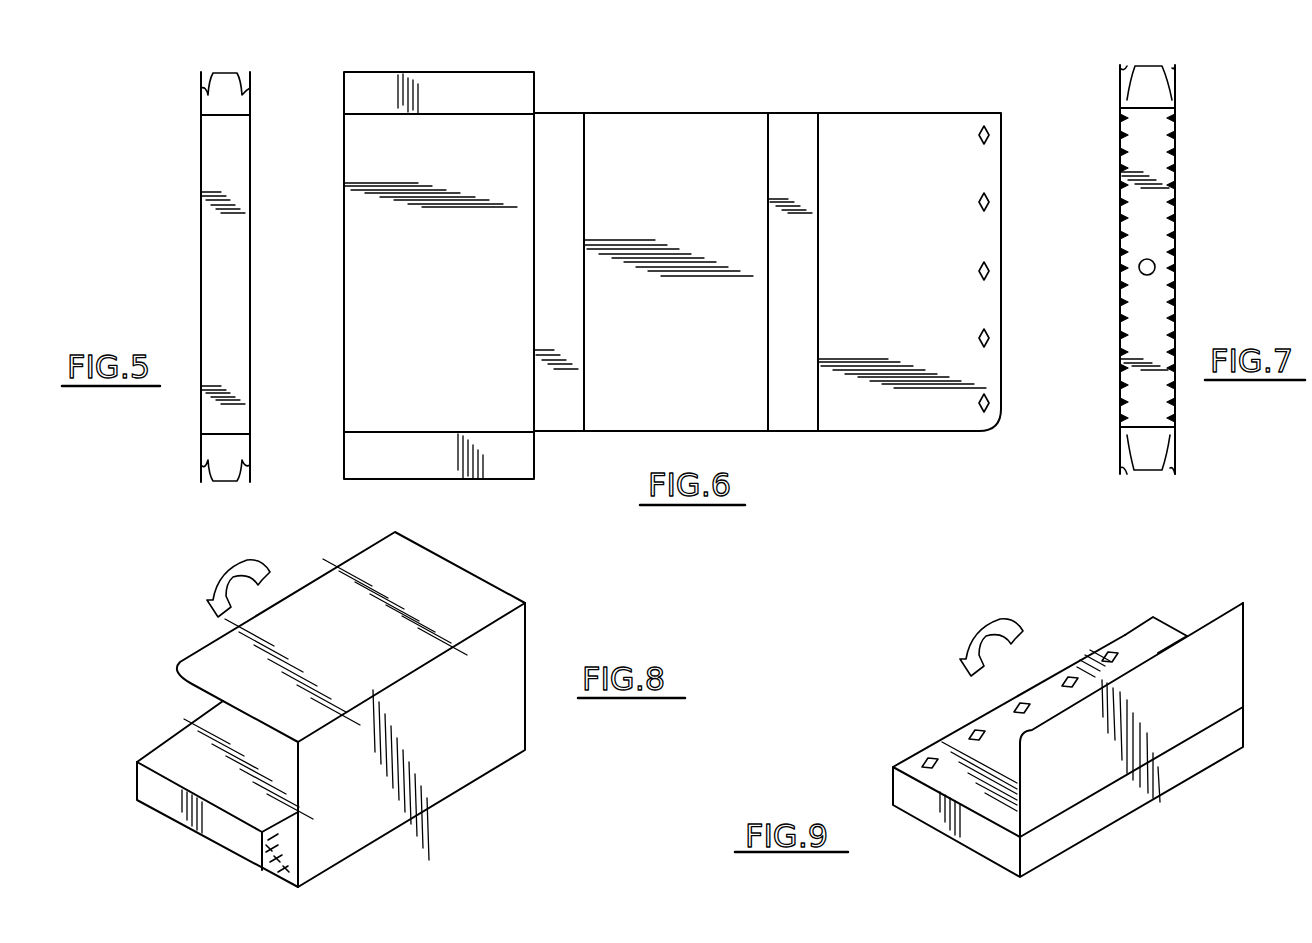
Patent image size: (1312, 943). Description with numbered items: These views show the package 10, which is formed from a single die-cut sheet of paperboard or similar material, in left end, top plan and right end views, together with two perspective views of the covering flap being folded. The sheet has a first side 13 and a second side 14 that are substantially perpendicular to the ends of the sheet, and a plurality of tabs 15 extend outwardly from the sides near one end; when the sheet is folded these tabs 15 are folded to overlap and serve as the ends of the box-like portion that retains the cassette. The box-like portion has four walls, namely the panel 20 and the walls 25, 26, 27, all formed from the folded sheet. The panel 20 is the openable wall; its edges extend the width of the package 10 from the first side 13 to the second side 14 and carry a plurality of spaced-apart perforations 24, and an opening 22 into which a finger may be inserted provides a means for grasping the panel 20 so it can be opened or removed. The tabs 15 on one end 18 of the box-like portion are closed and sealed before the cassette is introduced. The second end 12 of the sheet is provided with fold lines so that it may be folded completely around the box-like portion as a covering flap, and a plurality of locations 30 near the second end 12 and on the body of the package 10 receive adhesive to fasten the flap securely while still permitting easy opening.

In FIG. 5, the package 10 is at (152, 240).
In FIG. 6, the package 10 is at (838, 68).
In FIG. 8, the package 10 is at (512, 776).
In FIG. 9, the package 10 is at (1185, 797).
In FIG. 6, the second end 12 is at (1004, 333).
In FIG. 8, the second end 12 is at (337, 565).
In FIG. 9, the second end 12 is at (1243, 605).
In FIG. 6, the first side 13 is at (683, 109).
In FIG. 6, the second side 14 is at (703, 432).
In FIG. 5, the tabs 15 is at (242, 92).
In FIG. 6, the tabs 15 is at (352, 88).
In FIG. 7, the tabs 15 is at (1126, 68).
In FIG. 9, the tabs 15 is at (1153, 623).
In FIG. 8, the one end 18 is at (163, 798).
In FIG. 9, the one end 18 is at (960, 830).
In FIG. 7, the panel 20 is at (1151, 124).
In FIG. 8, the panel 20 is at (260, 850).
In FIG. 7, the opening 22 is at (1157, 266).
In FIG. 7, the perforations 24 is at (1122, 228).
In FIG. 8, the perforations 24 is at (290, 856).
In FIG. 6, the wall 25 is at (352, 262).
In FIG. 8, the wall 25 is at (213, 727).
In FIG. 5, the wall 26 is at (213, 170).
In FIG. 9, the wall 27 is at (988, 713).
In FIG. 6, the locations 30 is at (992, 266).
In FIG. 9, the locations 30 is at (1104, 658).